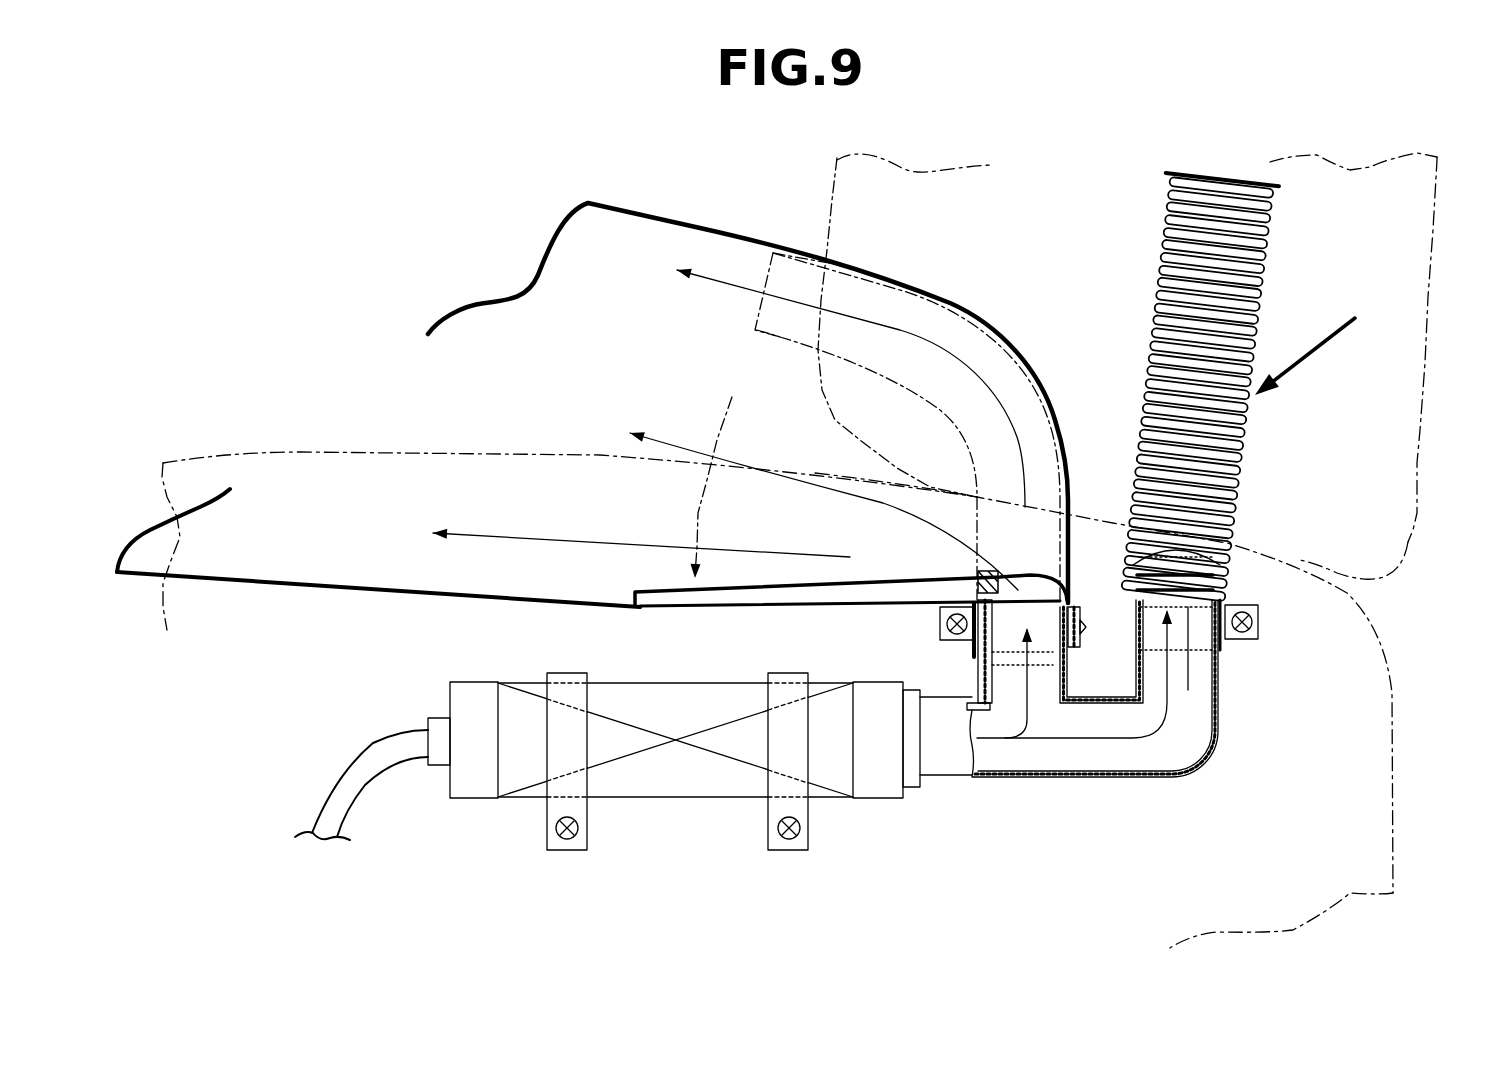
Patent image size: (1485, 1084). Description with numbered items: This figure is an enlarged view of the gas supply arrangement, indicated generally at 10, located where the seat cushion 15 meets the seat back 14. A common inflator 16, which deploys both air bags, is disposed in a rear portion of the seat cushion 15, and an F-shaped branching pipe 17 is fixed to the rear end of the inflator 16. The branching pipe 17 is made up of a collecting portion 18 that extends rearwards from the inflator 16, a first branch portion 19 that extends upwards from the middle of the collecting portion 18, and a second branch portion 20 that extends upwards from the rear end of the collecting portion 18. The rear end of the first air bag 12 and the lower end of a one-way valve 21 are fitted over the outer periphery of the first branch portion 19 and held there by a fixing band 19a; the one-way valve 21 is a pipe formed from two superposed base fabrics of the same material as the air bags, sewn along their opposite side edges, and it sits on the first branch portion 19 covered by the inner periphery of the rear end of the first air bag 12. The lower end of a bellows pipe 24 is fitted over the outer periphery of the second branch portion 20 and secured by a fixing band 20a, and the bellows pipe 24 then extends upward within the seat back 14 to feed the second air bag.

The air intake structure 10 is at (1336, 346).
The first air bag 12 is at (617, 207).
The seat back 14 is at (847, 207).
The seat cushion 15 is at (305, 457).
The inflator 16 is at (677, 806).
The branching pipe 17 is at (1135, 790).
The collecting portion 18 is at (1063, 780).
The first branch portion 19 is at (983, 683).
The fixing band 19a is at (1022, 592).
The second branch portion 20 is at (1217, 707).
The fixing band 20a is at (1130, 627).
The one-way valve 21 is at (780, 337).
The bellows pipe 24 is at (1163, 267).